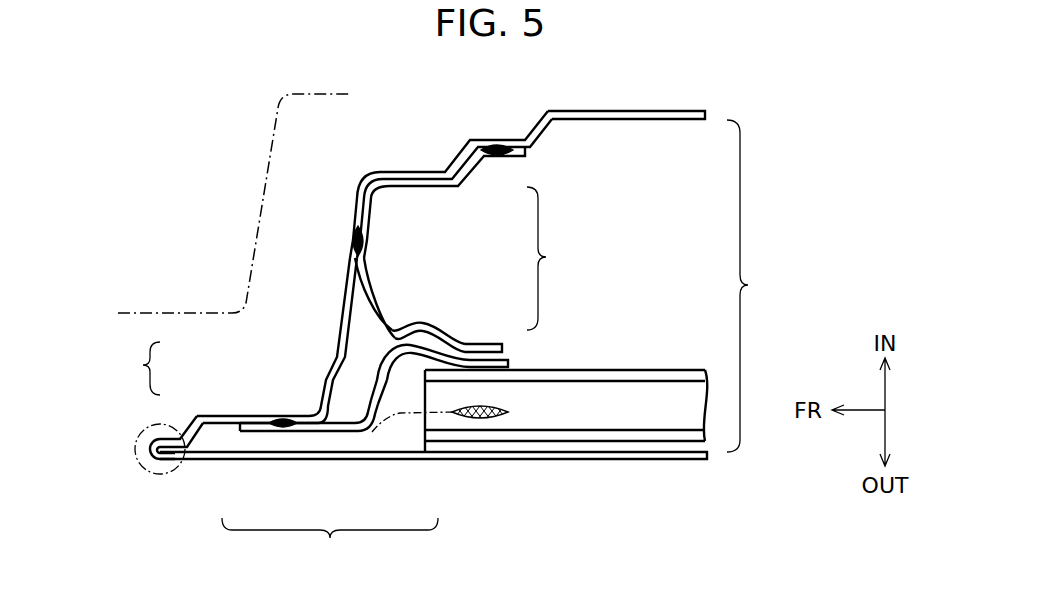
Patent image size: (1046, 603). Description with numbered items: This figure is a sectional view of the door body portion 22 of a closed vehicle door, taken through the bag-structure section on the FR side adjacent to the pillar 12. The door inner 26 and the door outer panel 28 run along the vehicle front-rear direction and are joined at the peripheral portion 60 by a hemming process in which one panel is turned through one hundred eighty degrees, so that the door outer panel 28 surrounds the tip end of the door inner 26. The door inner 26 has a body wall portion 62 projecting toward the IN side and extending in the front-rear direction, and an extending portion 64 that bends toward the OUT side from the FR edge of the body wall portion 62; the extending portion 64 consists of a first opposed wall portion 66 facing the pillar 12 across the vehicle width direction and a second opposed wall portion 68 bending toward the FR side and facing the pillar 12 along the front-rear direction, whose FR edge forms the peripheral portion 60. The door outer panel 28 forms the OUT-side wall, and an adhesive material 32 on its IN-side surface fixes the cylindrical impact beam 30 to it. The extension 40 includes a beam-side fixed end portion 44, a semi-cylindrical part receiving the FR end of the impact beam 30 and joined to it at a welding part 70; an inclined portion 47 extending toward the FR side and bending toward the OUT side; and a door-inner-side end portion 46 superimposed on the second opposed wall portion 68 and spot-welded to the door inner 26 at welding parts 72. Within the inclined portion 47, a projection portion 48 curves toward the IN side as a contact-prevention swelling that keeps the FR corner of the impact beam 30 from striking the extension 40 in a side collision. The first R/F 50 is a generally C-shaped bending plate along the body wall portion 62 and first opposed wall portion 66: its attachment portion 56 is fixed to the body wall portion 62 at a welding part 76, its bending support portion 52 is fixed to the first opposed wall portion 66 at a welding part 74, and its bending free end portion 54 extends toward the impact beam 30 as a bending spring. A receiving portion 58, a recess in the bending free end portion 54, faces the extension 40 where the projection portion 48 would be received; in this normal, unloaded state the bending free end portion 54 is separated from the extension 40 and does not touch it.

The pillar 12 is at (180, 300).
The door body portion 22 is at (475, 318).
The door inner 26 is at (650, 121).
The door outer panel 28 is at (650, 461).
The impact beam 30 is at (639, 398).
The adhesive material 32 is at (540, 460).
The extension 40 is at (365, 457).
The beam-side fixed end portion 44 is at (404, 377).
The door-inner-side end portion 46 is at (253, 432).
The inclined portion 47 is at (330, 424).
The projection portion 48 is at (378, 404).
The first R/F 50 is at (472, 249).
The bending support portion 52 is at (378, 245).
The bending free end portion 54 is at (480, 335).
The attachment portion 56 is at (465, 182).
The receiving portion 58 is at (429, 310).
The peripheral portion 60 is at (147, 474).
The body wall portion 62 is at (412, 170).
The extending portion 64 is at (229, 340).
The first opposed wall portion 66 is at (340, 272).
The second opposed wall portion 68 is at (228, 411).
The welding part 70 is at (500, 405).
The welding part 72 is at (285, 416).
The welding part 74 is at (350, 240).
The welding part 76 is at (493, 142).